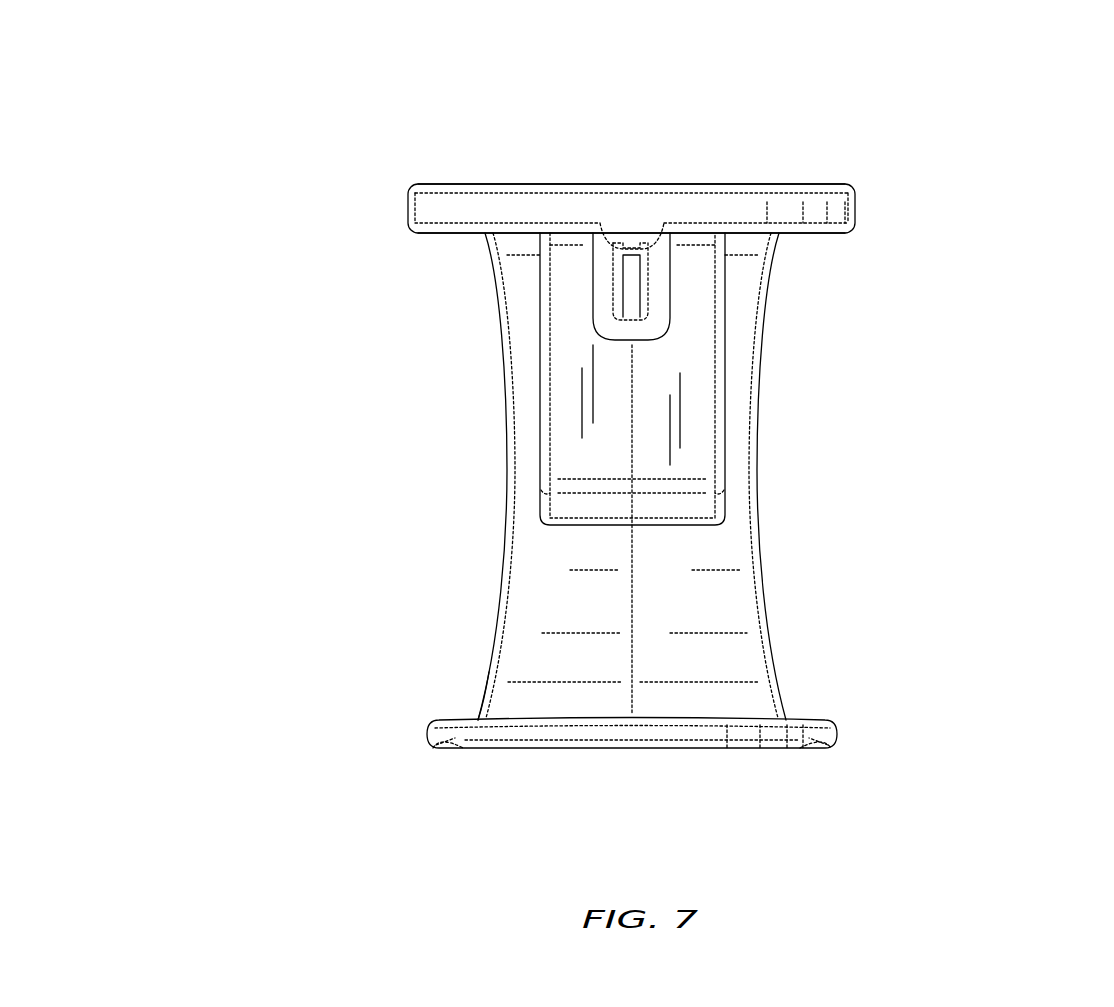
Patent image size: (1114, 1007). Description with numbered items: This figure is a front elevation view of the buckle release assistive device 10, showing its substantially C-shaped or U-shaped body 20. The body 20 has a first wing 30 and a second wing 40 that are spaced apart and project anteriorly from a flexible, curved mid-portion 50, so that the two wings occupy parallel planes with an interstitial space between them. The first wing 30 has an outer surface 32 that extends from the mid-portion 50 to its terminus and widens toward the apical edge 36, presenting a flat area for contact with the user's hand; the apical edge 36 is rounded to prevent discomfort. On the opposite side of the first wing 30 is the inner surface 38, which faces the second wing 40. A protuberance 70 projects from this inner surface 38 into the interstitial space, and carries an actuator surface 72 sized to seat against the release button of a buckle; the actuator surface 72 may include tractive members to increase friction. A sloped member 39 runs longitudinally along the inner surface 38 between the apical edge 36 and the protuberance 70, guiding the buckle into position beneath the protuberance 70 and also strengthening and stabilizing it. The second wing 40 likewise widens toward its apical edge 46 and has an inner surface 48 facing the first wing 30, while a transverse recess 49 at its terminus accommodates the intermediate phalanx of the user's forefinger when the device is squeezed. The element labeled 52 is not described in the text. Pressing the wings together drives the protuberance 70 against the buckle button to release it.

The buckle release assistive device 10 is at (1023, 108).
The body 20 is at (275, 307).
The first wing 30 is at (857, 203).
The outer surface 32 is at (770, 182).
The apical edge 36 is at (627, 213).
The inner surface 38 is at (458, 237).
The sloped member 39 is at (633, 290).
The second wing 40 is at (837, 738).
The apical edge 46 is at (627, 738).
The inner surface 48 is at (478, 722).
The transverse recess 49 is at (447, 750).
The mid-portion 50 is at (757, 463).
The central post 52 is at (660, 550).
The protuberance 70 is at (582, 425).
The actuator surface 72 is at (602, 527).